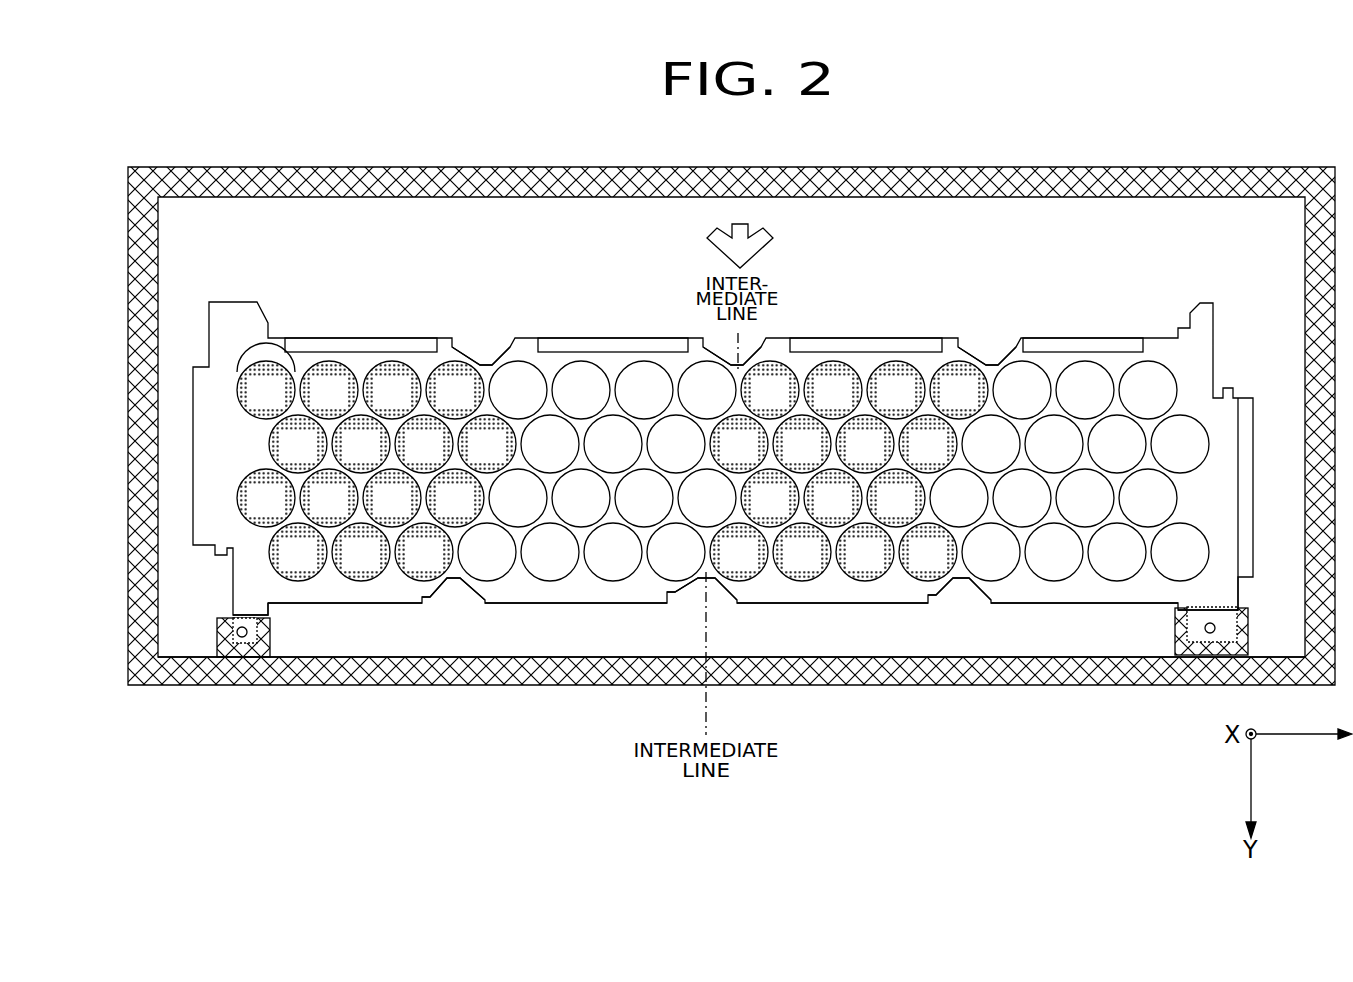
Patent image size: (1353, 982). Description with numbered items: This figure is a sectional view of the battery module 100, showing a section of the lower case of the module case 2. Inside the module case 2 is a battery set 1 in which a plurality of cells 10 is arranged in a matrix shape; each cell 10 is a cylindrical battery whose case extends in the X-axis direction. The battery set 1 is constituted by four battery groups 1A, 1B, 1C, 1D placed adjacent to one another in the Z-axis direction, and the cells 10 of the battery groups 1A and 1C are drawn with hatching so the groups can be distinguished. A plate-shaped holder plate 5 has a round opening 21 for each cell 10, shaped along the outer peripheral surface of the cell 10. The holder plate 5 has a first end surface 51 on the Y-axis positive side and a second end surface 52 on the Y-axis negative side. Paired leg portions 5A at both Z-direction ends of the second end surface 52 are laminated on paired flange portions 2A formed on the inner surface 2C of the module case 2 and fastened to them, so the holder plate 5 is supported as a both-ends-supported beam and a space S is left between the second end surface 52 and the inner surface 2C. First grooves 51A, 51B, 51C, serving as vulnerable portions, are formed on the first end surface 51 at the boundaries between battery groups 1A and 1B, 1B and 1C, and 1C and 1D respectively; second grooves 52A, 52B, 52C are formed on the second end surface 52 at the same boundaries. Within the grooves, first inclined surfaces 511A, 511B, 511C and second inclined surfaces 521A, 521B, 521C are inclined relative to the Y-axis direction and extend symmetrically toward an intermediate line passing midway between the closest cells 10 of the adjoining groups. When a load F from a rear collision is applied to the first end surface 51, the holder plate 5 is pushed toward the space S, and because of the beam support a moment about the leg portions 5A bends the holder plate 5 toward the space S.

The module case 2 is at (1235, 168).
The flange portion 2A is at (217, 633).
The inner surface 2C is at (675, 677).
The holder plate 5 is at (745, 470).
The leg portion 5A is at (268, 630).
The cell 10 is at (723, 509).
The battery set 1 is at (723, 509).
The battery group 1A is at (359, 590).
The battery group 1B is at (553, 591).
The battery group 1C is at (871, 591).
The battery group 1D is at (1060, 590).
The opening 21 is at (273, 360).
The first end surface 51 is at (601, 338).
The first groove 51A is at (497, 336).
The first groove 51B is at (752, 336).
The first groove 51C is at (992, 341).
The first inclined surface 511A is at (470, 355).
The first inclined surface 511B is at (722, 358).
The first inclined surface 511C is at (985, 356).
The second end surface 52 is at (594, 604).
The second groove 52A is at (462, 607).
The second groove 52B is at (723, 595).
The second groove 52C is at (969, 607).
The second inclined surface 521A is at (441, 591).
The second inclined surface 521B is at (668, 590).
The second inclined surface 521C is at (953, 590).
The battery module 100 is at (745, 459).
The load F is at (740, 233).
The space S is at (824, 645).